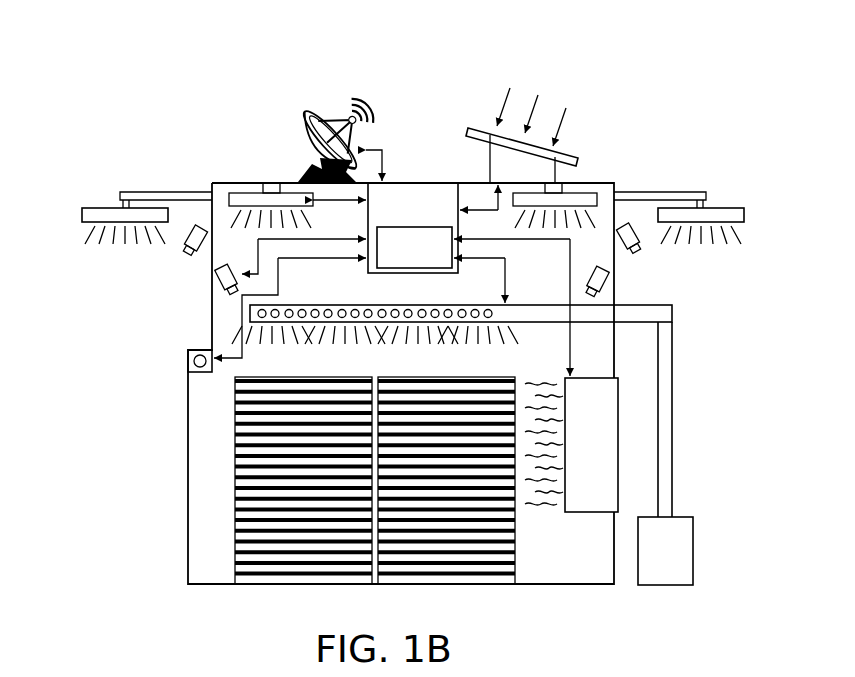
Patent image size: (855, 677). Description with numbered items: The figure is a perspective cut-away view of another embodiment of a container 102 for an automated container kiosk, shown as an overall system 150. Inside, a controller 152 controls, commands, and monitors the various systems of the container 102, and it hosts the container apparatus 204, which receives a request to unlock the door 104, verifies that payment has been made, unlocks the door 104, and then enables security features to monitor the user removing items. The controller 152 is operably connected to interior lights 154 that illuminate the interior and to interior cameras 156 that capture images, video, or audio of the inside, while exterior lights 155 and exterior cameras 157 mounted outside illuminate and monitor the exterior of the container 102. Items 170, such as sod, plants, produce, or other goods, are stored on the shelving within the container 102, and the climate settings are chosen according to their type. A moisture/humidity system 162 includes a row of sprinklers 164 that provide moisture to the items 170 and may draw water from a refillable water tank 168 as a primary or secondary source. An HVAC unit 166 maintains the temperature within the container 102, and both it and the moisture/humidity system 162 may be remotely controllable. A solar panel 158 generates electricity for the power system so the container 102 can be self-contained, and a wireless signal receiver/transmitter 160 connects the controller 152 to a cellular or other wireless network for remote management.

The system 150 is at (116, 88).
The container 102 is at (401, 383).
The door 104 is at (192, 471).
The controller 152 is at (392, 279).
The container apparatus 204 is at (414, 247).
The interior lights 154 is at (413, 205).
The exterior lights 155 is at (84, 213).
The interior cameras 156 is at (232, 265).
The exterior cameras 157 is at (184, 246).
The solar panel 158 is at (470, 128).
The wireless signal receiver/transmitter 160 is at (299, 122).
The moisture/humidity system 162 is at (543, 301).
The sprinklers 164 is at (436, 305).
The HVAC unit 166 is at (571, 445).
The refillable water tank 168 is at (665, 551).
The items 170 is at (281, 582).